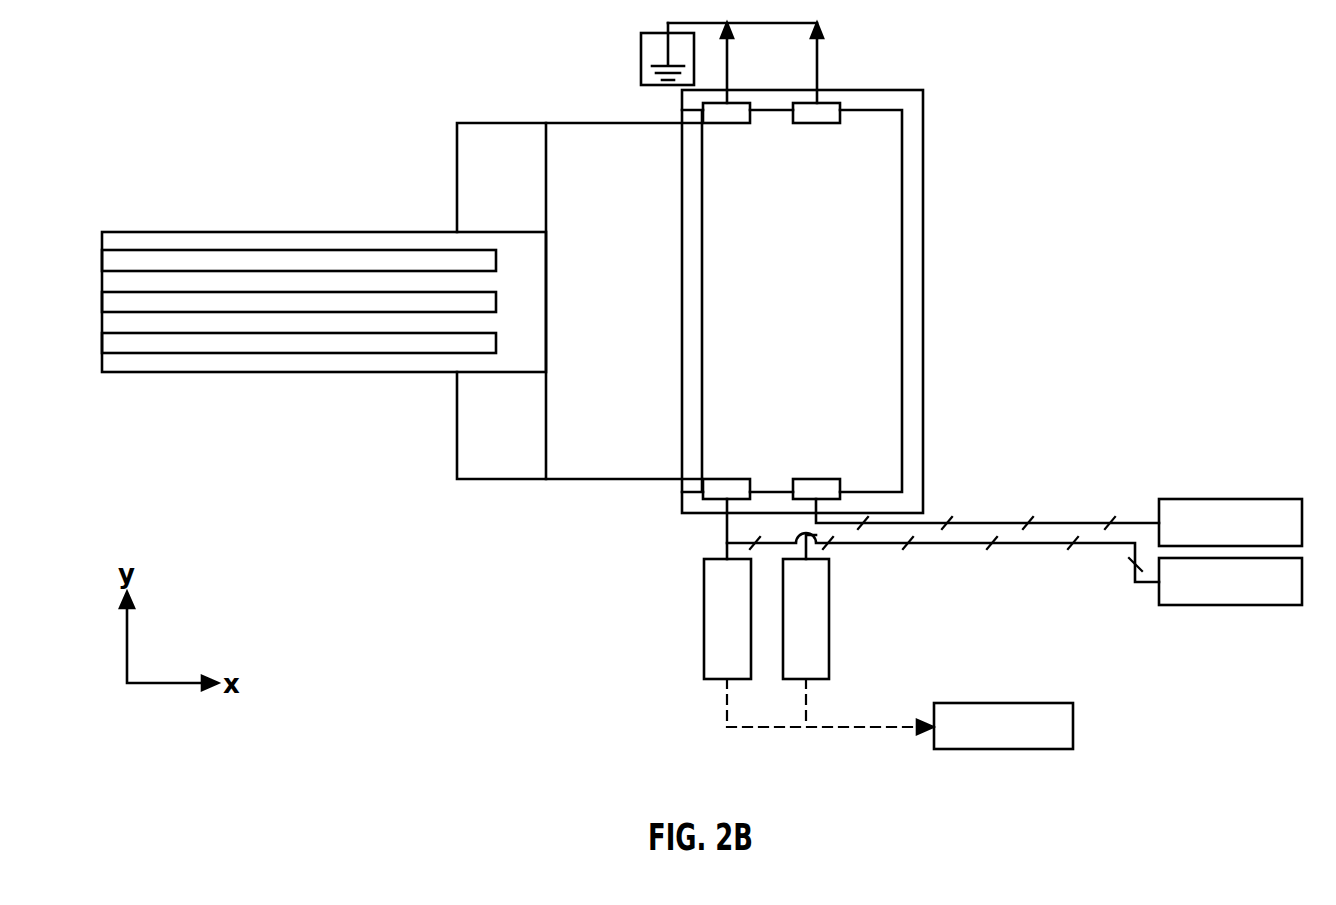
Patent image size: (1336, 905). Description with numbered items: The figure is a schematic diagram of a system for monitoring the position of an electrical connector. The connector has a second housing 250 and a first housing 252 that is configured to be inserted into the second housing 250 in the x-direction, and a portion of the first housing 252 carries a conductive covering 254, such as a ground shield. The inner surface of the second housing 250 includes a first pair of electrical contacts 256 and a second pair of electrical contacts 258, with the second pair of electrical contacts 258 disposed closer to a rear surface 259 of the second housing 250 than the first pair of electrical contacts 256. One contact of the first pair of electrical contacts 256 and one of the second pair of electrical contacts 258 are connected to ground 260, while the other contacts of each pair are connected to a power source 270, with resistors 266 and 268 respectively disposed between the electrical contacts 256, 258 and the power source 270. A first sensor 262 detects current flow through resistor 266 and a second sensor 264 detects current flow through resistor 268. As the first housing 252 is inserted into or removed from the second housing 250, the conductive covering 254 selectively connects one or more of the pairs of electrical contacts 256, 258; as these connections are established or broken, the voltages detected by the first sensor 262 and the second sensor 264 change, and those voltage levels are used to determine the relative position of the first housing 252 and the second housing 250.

The second housing 250 is at (924, 110).
The first housing 252 is at (479, 122).
The conductive covering 254 is at (595, 462).
The first pair of electrical contacts 256 is at (727, 124).
The second pair of electrical contacts 258 is at (816, 124).
The rear surface 259 is at (906, 181).
The ground 260 is at (656, 53).
The first sensor 262 is at (1253, 541).
The second sensor 264 is at (1253, 600).
The resistor 266 is at (694, 606).
The resistor 268 is at (839, 611).
The power source 270 is at (1026, 744).